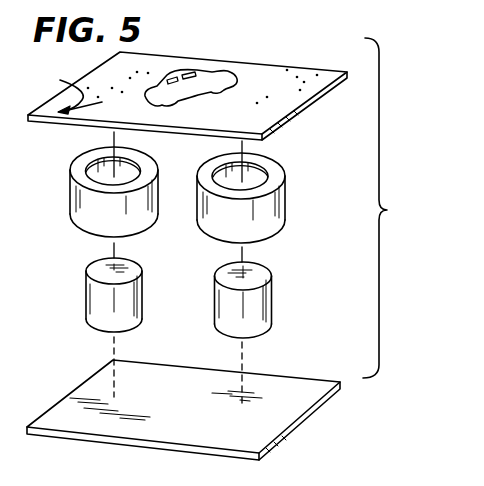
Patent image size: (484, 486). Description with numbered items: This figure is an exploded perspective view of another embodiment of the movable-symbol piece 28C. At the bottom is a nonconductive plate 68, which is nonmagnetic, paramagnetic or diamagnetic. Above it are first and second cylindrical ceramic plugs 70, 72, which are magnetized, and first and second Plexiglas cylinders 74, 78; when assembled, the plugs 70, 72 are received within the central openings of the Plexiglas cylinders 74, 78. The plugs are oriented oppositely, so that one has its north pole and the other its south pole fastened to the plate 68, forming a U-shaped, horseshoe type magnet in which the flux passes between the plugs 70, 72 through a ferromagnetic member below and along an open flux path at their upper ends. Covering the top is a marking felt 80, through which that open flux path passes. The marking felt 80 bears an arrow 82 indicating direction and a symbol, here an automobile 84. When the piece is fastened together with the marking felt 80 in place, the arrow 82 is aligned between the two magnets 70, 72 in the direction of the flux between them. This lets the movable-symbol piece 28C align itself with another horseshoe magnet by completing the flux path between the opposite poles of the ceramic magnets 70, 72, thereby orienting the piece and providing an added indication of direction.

The movable-symbol piece 28C is at (395, 208).
The plate 68 is at (84, 384).
The first cylindrical ceramic plug 70 is at (86, 292).
The second cylindrical ceramic plug 72 is at (271, 290).
The first Plexiglas cylinder 74 is at (70, 194).
The second Plexiglas cylinder 78 is at (285, 190).
The marking felt 80 is at (285, 62).
The arrow 82 is at (60, 80).
The automobile 84 is at (202, 70).